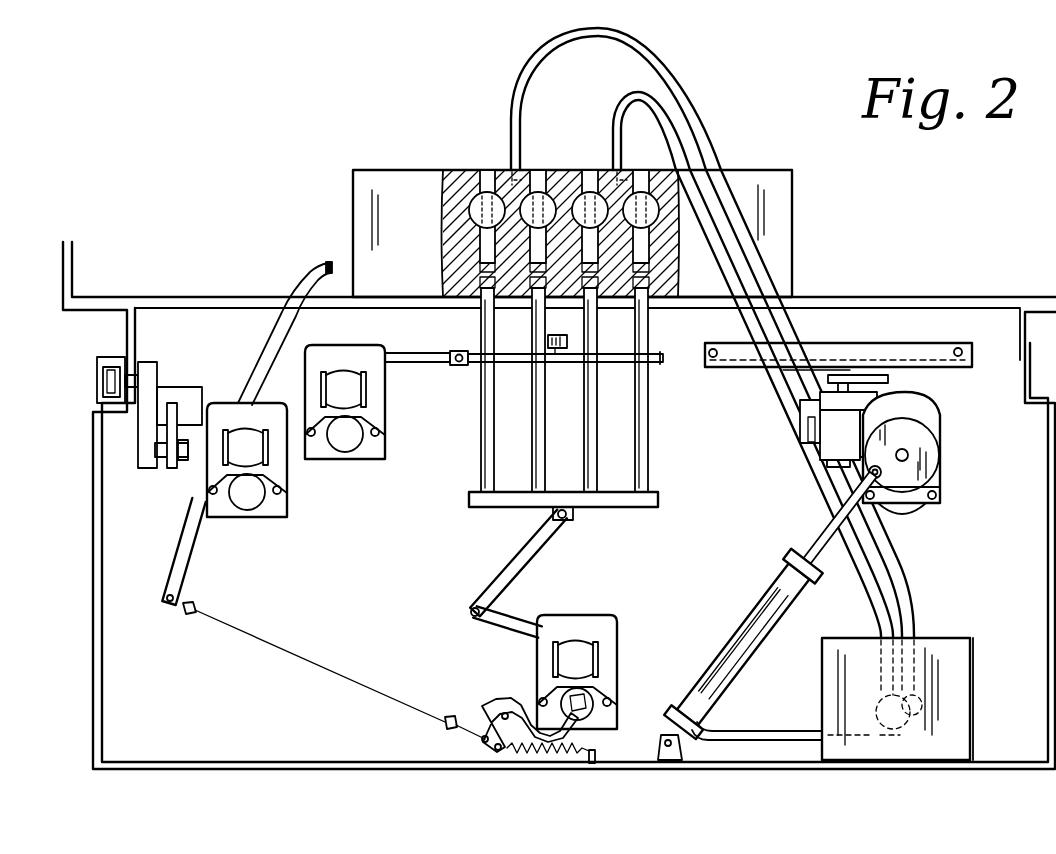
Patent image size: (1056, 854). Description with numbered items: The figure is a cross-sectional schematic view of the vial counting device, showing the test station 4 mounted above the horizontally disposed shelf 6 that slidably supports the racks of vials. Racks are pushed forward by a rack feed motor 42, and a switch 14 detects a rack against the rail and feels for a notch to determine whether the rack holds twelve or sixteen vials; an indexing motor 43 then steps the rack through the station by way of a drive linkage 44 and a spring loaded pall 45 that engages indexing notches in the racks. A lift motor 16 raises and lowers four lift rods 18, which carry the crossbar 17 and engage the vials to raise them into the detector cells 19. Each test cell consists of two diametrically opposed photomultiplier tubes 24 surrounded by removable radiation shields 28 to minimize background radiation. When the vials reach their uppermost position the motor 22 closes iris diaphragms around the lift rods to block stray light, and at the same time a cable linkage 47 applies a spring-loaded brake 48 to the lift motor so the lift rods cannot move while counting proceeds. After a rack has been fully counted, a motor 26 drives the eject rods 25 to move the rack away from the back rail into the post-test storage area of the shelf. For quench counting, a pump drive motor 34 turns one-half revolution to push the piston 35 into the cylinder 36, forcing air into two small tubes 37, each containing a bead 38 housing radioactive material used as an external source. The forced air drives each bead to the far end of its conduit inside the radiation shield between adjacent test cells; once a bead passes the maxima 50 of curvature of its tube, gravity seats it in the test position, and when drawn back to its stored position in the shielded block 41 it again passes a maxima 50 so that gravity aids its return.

The test station 4 is at (860, 207).
The shelf 6 is at (932, 296).
The switch 14 is at (552, 348).
The lift motor 16 is at (590, 613).
The cross bar 17 is at (614, 500).
The lift rods 18 is at (537, 448).
The detector cells 19 is at (460, 212).
The motor 22 is at (283, 472).
The photomultiplier tubes 24 is at (470, 268).
The eject rods 25 is at (730, 334).
The motor 26 is at (843, 432).
The radiation shields 28 is at (780, 183).
The pump drive motor 34 is at (930, 418).
The piston 35 is at (822, 533).
The cylinder 36 is at (757, 607).
The tubes 37 is at (896, 572).
The bead 38 is at (920, 722).
The shielded block 41 is at (947, 645).
The rack feed motor 42 is at (153, 366).
The indexing motor 43 is at (355, 327).
The drive linkage 44 is at (440, 340).
The spring loaded pall 45 is at (620, 358).
The cable linkage 47 is at (195, 607).
The spring-loaded brake 48 is at (492, 722).
The maxima 50 is at (634, 73).